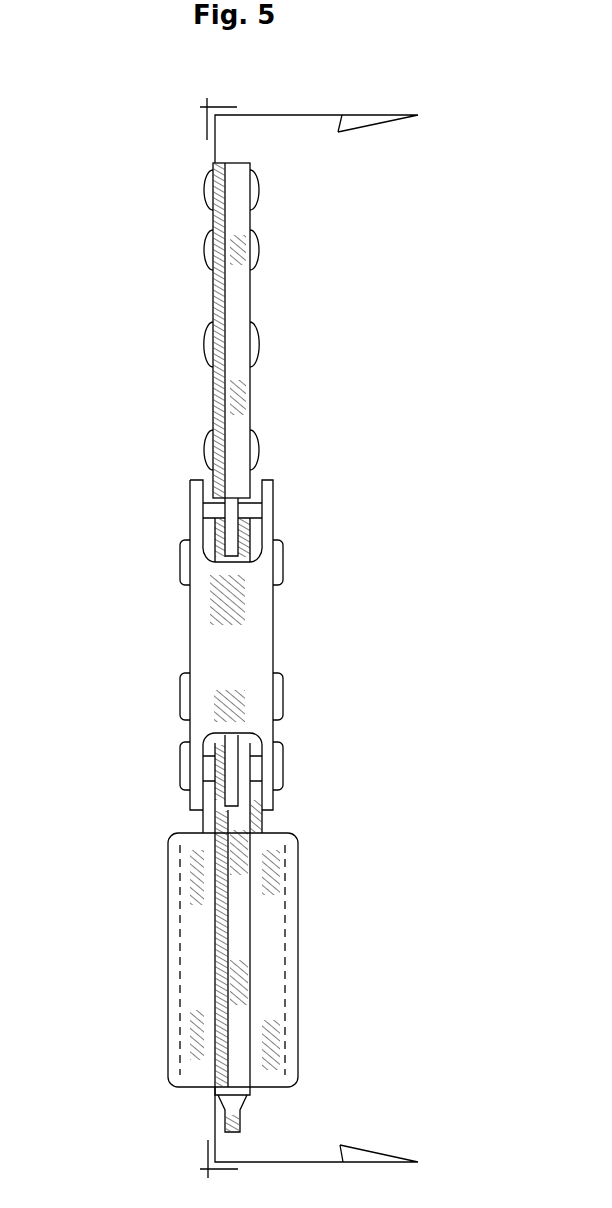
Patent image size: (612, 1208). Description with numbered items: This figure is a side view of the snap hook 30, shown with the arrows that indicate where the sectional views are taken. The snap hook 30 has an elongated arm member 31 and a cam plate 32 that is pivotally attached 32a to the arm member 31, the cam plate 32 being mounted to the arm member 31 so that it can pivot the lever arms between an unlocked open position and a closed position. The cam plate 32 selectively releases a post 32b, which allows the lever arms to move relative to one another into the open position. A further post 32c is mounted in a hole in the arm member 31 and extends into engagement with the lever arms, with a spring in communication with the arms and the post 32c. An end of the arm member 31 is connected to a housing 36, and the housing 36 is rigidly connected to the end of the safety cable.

The snap hook 30 is at (92, 180).
The arm member 31 is at (241, 300).
The cam plate 32 is at (264, 623).
The pivotal attachment 32a is at (284, 546).
The post 32b is at (284, 694).
The post 32c is at (284, 762).
The housing 36 is at (293, 941).